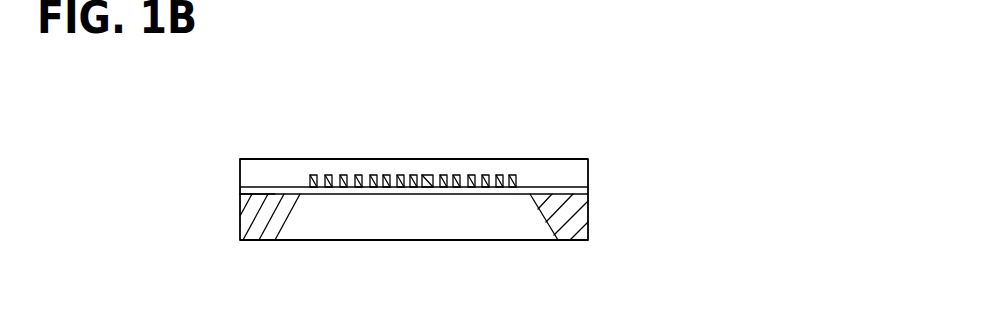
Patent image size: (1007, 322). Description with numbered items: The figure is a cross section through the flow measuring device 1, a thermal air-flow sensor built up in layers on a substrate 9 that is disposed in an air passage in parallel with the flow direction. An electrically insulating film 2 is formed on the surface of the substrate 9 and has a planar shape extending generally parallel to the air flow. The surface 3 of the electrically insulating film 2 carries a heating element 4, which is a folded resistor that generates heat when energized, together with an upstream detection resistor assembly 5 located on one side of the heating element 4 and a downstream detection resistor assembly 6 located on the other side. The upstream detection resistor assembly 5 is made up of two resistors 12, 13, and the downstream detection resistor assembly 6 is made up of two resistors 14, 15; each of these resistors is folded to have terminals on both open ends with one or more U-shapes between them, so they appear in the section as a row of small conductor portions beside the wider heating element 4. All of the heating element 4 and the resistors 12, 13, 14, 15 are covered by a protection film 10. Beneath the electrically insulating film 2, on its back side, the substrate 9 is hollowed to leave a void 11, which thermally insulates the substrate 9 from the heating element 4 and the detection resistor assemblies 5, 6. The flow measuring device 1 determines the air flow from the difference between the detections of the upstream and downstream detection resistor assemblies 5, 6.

The flow measuring device 1 is at (594, 140).
The electrically insulating film 2 is at (578, 190).
The surface 3 is at (257, 188).
The heating element 4 is at (425, 170).
The upstream detection resistor assembly 5 is at (306, 171).
The downstream detection resistor assembly 6 is at (532, 174).
The substrate 9 is at (577, 225).
The protection film 10 is at (578, 173).
The void 11 is at (424, 220).
The resistor 12 is at (323, 188).
The resistor 13 is at (313, 175).
The resistor 14 is at (441, 188).
The resistor 15 is at (454, 175).